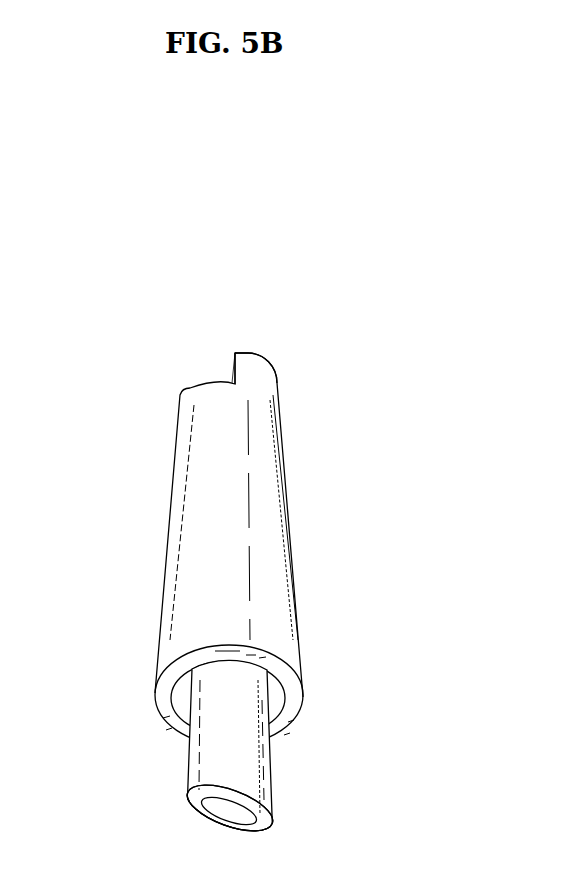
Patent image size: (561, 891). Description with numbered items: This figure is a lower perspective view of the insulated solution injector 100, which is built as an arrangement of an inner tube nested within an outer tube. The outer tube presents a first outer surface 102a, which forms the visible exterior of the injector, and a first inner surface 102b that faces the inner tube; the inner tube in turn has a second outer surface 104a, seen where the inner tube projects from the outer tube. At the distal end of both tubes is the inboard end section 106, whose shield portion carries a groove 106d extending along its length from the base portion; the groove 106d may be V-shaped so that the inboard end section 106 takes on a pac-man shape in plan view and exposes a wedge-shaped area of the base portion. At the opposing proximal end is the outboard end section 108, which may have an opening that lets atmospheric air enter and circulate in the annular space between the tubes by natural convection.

The insulated solution injector 100 is at (246, 318).
The first outer surface 102a is at (170, 541).
The first inner surface 102b is at (165, 712).
The second outer surface 104a is at (212, 768).
The inboard end section 106 is at (309, 356).
The groove 106d is at (196, 372).
The outboard end section 108 is at (321, 774).